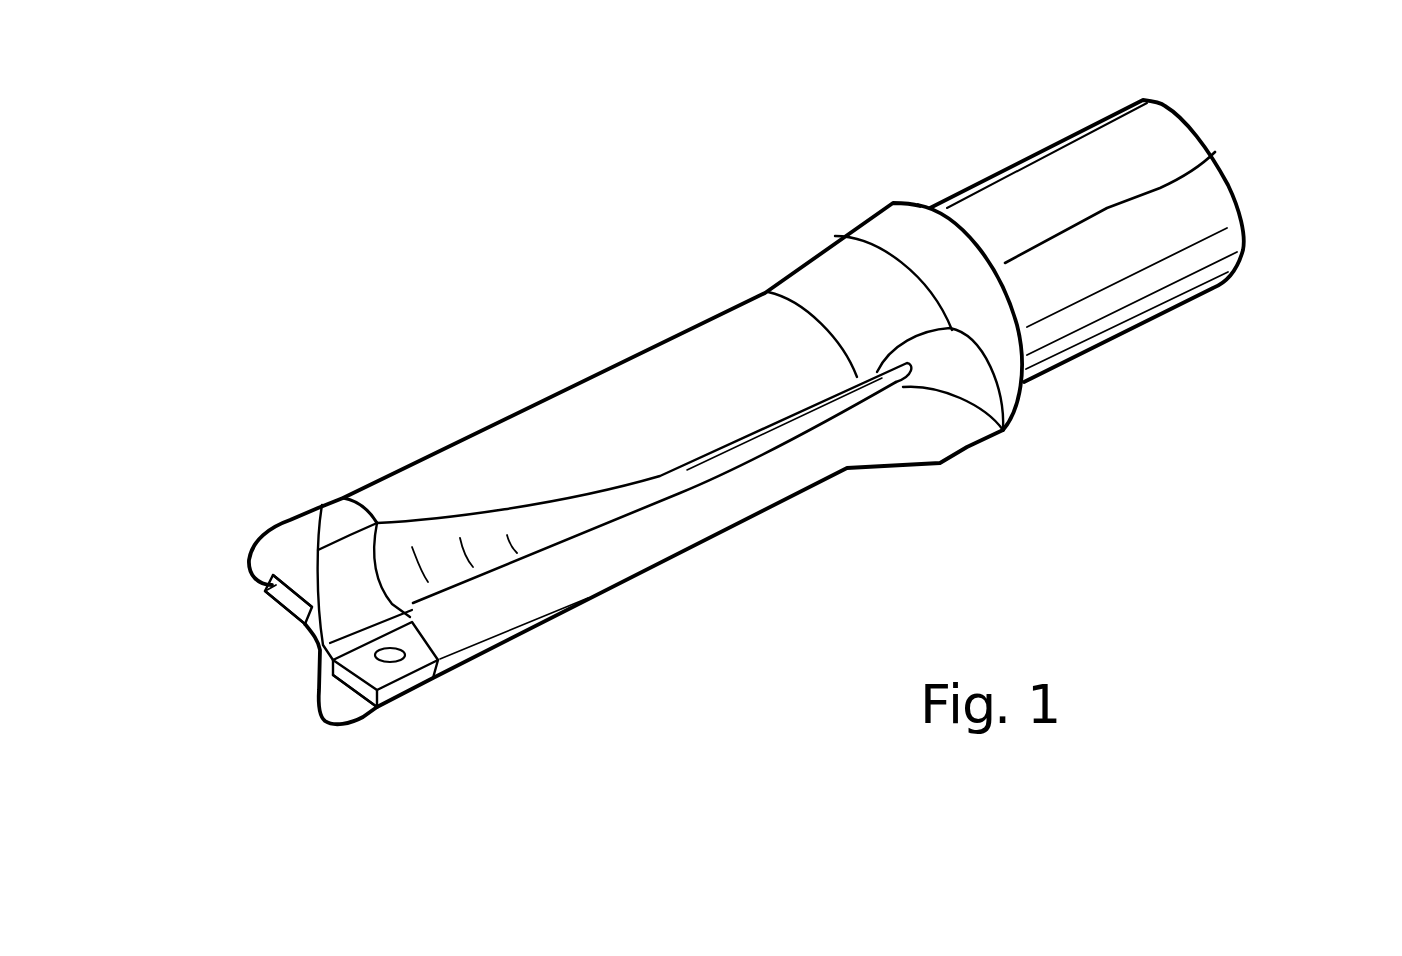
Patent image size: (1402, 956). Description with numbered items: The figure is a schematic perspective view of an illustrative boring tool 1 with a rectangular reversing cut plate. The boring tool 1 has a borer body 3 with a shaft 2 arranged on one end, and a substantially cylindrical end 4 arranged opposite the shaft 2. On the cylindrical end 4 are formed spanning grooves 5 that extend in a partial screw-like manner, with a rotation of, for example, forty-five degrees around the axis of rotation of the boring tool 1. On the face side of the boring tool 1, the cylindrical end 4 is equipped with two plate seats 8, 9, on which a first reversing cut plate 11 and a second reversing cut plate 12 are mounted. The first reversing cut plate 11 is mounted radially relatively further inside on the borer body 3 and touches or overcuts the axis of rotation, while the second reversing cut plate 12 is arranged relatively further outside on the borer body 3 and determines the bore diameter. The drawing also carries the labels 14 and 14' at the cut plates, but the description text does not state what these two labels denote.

The boring tool 1 is at (707, 252).
The shaft 2 is at (1168, 157).
The borer body 3 is at (844, 287).
The cylindrical end 4 is at (620, 407).
The spanning grooves 5 is at (618, 548).
The plate seat 8 is at (296, 589).
The plate seat 9 is at (411, 694).
The first reversing cut plate 11 is at (266, 594).
The second reversing cut plate 12 is at (388, 690).
The cutting edge 14 is at (229, 670).
The cutting edge 14' is at (312, 742).